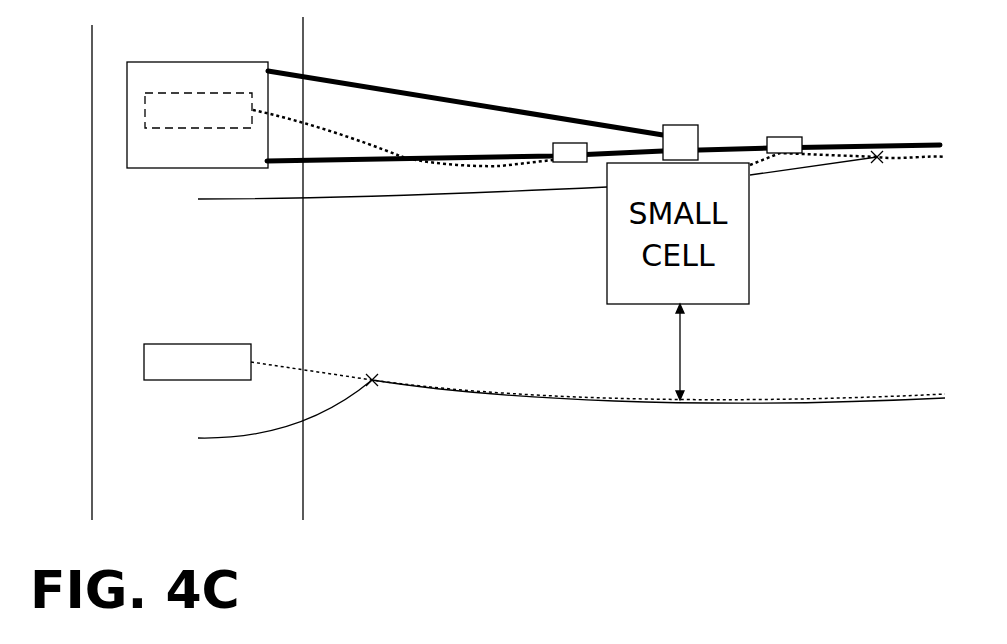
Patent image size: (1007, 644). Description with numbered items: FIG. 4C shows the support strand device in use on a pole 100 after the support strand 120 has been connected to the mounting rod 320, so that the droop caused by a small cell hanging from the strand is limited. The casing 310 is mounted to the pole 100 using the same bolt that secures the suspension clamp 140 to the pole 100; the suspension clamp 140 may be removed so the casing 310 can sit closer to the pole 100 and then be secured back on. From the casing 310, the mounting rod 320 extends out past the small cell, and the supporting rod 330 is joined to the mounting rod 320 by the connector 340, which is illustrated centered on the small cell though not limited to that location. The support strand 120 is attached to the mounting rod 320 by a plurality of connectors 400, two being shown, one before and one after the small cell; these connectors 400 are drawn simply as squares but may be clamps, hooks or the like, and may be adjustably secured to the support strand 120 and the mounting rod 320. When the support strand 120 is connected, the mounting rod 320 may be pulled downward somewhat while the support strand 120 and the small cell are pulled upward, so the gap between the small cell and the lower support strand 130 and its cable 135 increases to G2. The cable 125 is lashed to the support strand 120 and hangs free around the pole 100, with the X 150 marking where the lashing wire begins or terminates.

The pole 100 is at (128, 282).
The support strand 120 is at (518, 170).
The cable 125 is at (385, 200).
The support strand 130 is at (558, 402).
The cable 135 is at (712, 407).
The suspension clamp 140 is at (178, 115).
The X 150 is at (877, 162).
The casing 310 is at (152, 168).
The mounting rod 320 is at (462, 127).
The supporting rod 330 is at (478, 99).
The connector 340 is at (678, 125).
The connectors 400 is at (561, 143).
The gap G2 is at (682, 348).